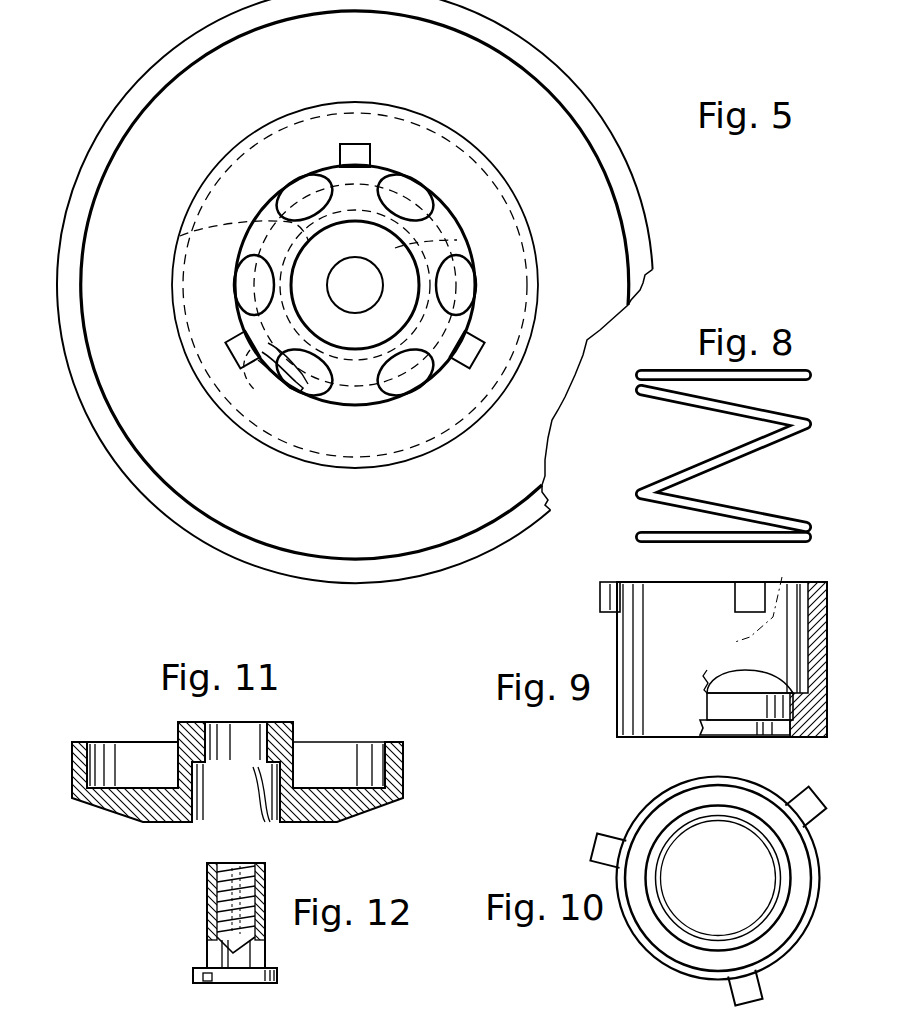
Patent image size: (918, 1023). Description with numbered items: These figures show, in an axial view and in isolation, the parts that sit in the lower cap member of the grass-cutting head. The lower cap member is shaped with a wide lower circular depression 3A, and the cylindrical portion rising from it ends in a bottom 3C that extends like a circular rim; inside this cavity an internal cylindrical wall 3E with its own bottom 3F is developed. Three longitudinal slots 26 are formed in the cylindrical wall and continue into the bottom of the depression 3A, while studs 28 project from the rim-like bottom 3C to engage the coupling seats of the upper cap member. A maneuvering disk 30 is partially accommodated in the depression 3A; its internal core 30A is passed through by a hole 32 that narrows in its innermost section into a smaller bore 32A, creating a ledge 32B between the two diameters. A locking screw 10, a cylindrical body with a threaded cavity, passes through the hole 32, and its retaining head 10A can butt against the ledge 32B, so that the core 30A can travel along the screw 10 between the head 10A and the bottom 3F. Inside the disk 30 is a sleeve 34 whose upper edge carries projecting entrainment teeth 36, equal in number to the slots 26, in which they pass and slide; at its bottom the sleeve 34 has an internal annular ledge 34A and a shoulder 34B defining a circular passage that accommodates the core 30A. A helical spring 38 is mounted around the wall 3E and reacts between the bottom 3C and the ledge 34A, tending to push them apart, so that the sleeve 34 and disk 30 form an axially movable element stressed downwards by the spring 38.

In FIG. 5, the lower circular depression 3A is at (222, 176).
In FIG. 5, the bottom 3C is at (427, 224).
In FIG. 5, the internal cylindrical wall 3E is at (190, 233).
In FIG. 5, the bottom 3F is at (380, 254).
In FIG. 5, the longitudinal slots 26 is at (244, 352).
In FIG. 5, the studs 28 is at (425, 190).
In FIG. 8, the helical spring 38 is at (678, 478).
In FIG. 9, the sleeve 34 is at (640, 645).
In FIG. 10, the sleeve 34 is at (796, 942).
In FIG. 9, the internal annular ledge 34A is at (727, 678).
In FIG. 10, the internal annular ledge 34A is at (655, 921).
In FIG. 9, the shoulder 34B is at (772, 733).
In FIG. 10, the shoulder 34B is at (672, 845).
In FIG. 9, the entrainment teeth 36 is at (603, 592).
In FIG. 10, the entrainment teeth 36 is at (612, 835).
In FIG. 11, the maneuvering disk 30 is at (120, 805).
In FIG. 11, the internal core 30A is at (183, 722).
In FIG. 11, the narrowed hole section 32A is at (258, 735).
In FIG. 11, the hole 32 is at (220, 802).
In FIG. 11, the ledge 32B is at (264, 802).
In FIG. 12, the locking screw 10 is at (207, 908).
In FIG. 12, the retaining head 10A is at (200, 977).